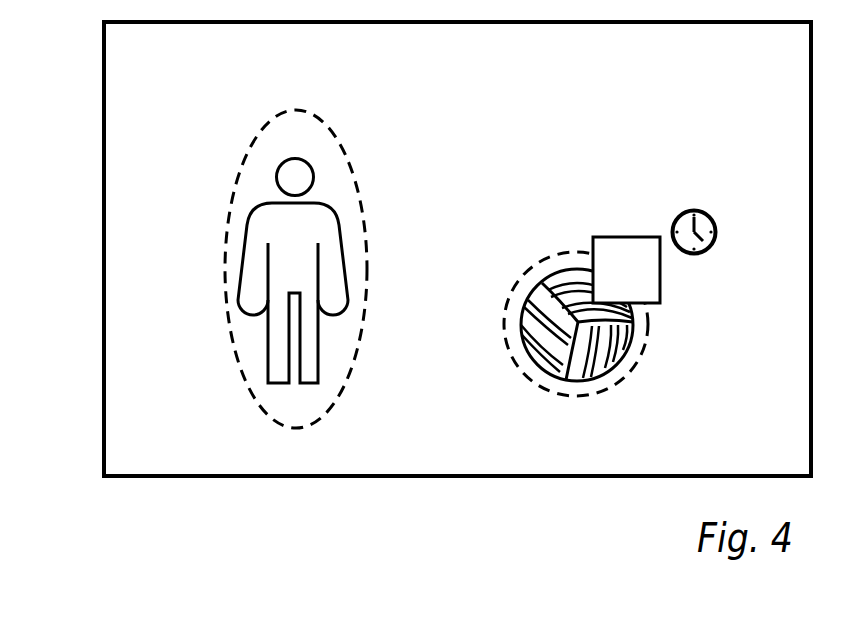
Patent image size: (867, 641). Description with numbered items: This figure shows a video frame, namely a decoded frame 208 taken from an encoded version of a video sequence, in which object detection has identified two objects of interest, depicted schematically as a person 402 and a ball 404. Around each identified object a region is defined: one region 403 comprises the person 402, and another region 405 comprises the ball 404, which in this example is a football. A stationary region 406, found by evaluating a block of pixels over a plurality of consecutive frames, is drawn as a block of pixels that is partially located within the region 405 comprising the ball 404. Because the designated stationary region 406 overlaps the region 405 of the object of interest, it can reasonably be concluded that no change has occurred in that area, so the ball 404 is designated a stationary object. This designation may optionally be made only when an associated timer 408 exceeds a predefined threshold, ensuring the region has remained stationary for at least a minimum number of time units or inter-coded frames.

The decoded frame 208 is at (173, 476).
The person 402 is at (303, 383).
The region 403 is at (283, 425).
The ball 404 is at (595, 377).
The region 405 is at (555, 393).
The stationary region 406 is at (628, 237).
The timer 408 is at (703, 253).